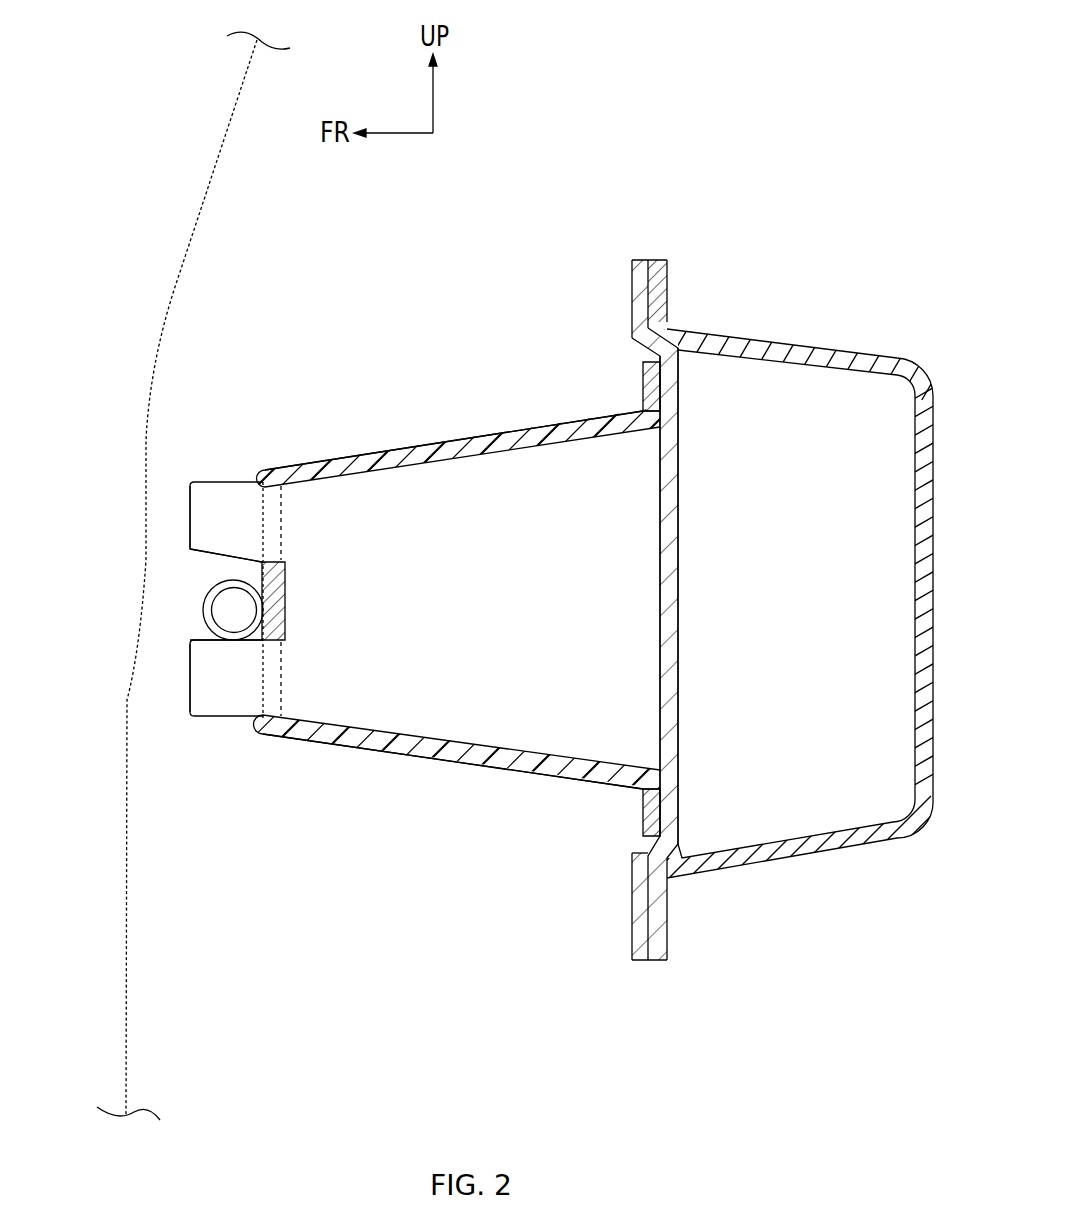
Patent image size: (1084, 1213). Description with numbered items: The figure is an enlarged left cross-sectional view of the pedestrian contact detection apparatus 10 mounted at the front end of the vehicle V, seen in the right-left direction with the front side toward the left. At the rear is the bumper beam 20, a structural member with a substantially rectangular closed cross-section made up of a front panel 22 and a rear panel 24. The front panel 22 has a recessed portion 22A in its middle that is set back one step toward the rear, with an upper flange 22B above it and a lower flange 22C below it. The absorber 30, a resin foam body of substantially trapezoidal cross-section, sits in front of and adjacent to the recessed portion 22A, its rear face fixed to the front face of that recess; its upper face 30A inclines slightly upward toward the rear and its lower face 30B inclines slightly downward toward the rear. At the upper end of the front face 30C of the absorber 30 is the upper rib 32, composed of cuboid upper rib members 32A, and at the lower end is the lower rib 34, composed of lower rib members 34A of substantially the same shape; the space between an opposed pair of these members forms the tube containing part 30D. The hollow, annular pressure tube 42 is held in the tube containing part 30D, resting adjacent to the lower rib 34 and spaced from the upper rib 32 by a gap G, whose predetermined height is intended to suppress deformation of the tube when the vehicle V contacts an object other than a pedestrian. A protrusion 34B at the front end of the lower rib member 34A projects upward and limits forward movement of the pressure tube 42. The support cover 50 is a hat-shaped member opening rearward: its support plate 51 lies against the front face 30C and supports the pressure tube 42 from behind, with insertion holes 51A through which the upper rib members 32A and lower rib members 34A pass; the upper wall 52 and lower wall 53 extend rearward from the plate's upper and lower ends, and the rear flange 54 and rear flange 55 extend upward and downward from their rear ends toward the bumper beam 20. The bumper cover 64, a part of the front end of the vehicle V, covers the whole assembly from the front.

The pedestrian contact detection apparatus 10 is at (683, 147).
The bumper beam 20 is at (817, 345).
The front panel 22 is at (657, 560).
The recessed portion 22A is at (662, 578).
The upper flange 22B is at (630, 298).
The lower flange 22C is at (632, 917).
The rear panel 24 is at (655, 260).
The absorber 30 is at (407, 590).
The upper face 30A is at (533, 431).
The lower face 30B is at (488, 767).
The front face 30C is at (281, 642).
The tube containing part 30D is at (230, 587).
The upper rib 32 is at (215, 461).
The upper rib member 32A is at (228, 482).
The lower rib 34 is at (174, 738).
The lower rib member 34A is at (253, 718).
The protrusion 34B is at (190, 642).
The pressure tube 42 is at (208, 622).
The support cover 50 is at (462, 590).
The support plate 51 is at (174, 598).
The insertion hole 51A is at (192, 490).
The upper wall 52 is at (319, 467).
The lower wall 53 is at (393, 752).
The rear flange 54 is at (643, 364).
The rear flange 55 is at (645, 812).
The bumper cover 64 is at (202, 196).
The gap G is at (233, 567).
The vehicle V is at (758, 115).